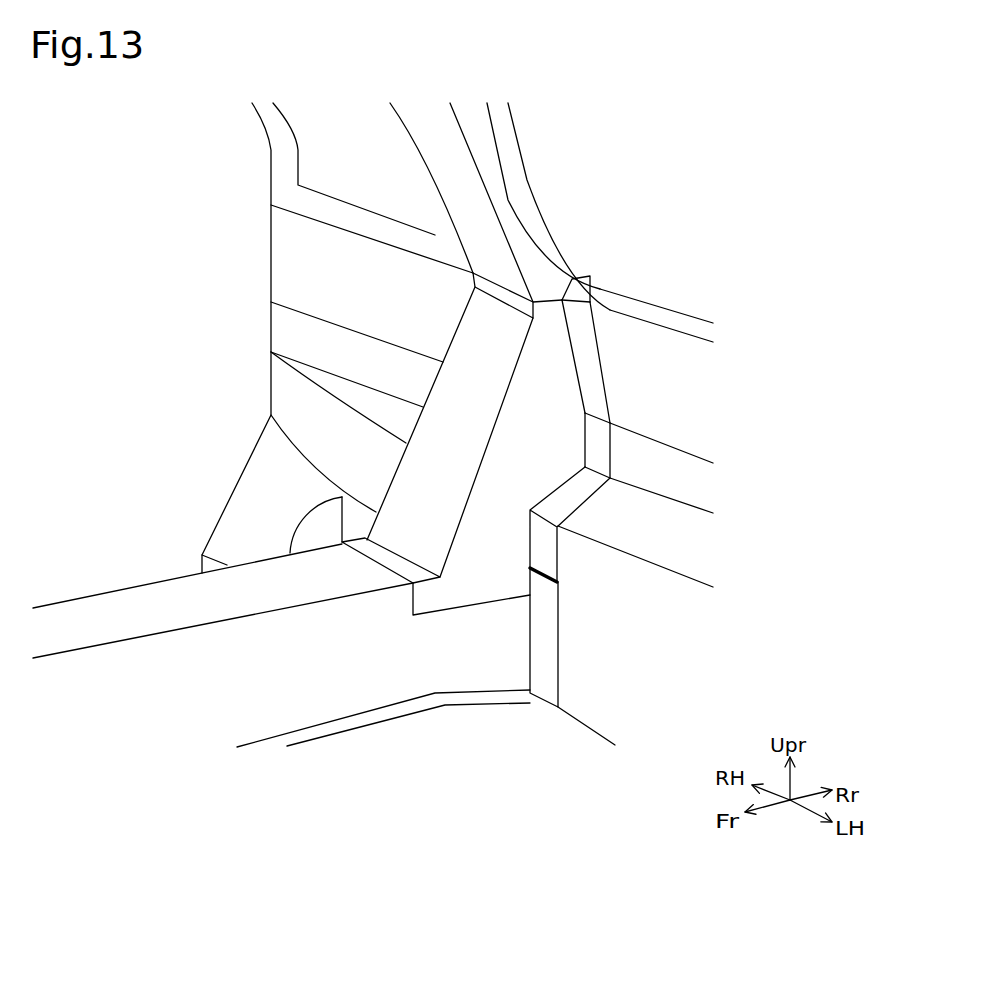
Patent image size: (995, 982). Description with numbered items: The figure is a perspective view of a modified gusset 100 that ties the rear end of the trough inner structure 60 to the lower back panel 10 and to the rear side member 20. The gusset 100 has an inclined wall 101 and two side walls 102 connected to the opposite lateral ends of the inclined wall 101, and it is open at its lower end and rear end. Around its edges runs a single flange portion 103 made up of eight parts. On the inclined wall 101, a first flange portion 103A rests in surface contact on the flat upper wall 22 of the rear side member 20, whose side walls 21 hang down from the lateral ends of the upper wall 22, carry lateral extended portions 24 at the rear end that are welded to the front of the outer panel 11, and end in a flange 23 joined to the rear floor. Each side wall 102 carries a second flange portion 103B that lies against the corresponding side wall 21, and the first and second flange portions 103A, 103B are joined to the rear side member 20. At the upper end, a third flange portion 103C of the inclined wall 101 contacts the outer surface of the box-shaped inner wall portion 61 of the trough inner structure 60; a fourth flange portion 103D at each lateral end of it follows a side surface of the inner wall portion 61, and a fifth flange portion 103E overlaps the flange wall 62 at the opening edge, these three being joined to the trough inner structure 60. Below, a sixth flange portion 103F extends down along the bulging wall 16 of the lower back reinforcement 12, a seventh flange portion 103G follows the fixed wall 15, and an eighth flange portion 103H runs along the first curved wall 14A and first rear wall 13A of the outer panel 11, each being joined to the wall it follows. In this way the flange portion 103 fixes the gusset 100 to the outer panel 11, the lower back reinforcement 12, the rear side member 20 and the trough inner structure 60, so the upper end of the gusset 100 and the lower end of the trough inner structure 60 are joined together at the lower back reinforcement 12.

The lower back panel 10 is at (760, 317).
The outer panel 11 is at (695, 543).
The lower back reinforcement 12 is at (700, 368).
The first rear wall 13A is at (623, 660).
The first curved wall 14A is at (700, 570).
The fixed wall 15 is at (698, 487).
The bulging wall 16 is at (700, 420).
The rear side member 20 is at (127, 554).
The side walls 21 is at (210, 710).
The upper wall 22 is at (163, 618).
The flange 23 is at (360, 722).
The lateral extended portions 24 is at (547, 622).
The trough inner structure 60 is at (485, 152).
The inner wall portion 61 is at (457, 187).
The flange wall 62 is at (518, 202).
The gusset 100 is at (318, 418).
The inclined wall 101 is at (490, 355).
The side walls 102 is at (498, 540).
The flange portion 103 is at (383, 557).
The first flange portion 103A is at (365, 547).
The second flange portion 103B is at (430, 597).
The third flange portion 103C is at (478, 285).
The fourth flange portion 103D is at (565, 284).
The fifth flange portion 103E is at (575, 340).
The sixth flange portion 103F is at (583, 385).
The seventh flange portion 103G is at (597, 450).
The eighth flange portion 103H is at (538, 548).